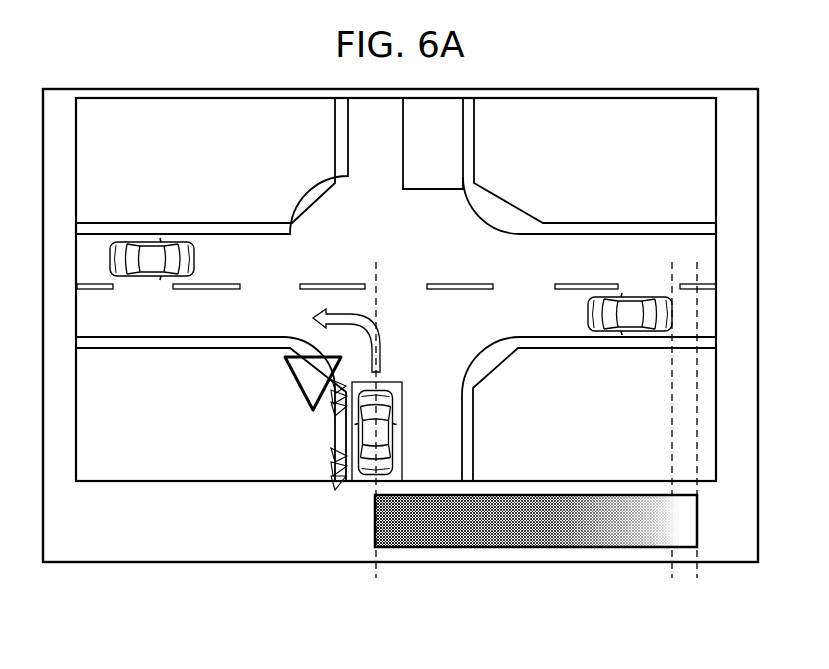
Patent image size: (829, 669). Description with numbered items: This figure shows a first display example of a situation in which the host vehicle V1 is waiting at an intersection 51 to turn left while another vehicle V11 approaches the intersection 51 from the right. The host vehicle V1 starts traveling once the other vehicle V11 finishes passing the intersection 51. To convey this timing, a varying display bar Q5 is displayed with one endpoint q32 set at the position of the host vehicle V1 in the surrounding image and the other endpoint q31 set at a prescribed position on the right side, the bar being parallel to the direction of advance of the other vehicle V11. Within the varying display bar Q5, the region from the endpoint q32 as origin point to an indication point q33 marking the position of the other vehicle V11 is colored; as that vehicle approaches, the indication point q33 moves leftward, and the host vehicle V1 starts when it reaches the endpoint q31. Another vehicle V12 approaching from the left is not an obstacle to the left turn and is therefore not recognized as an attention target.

The intersection 51 is at (454, 264).
The host vehicle V1 is at (372, 451).
The other vehicle V12 is at (144, 253).
The other vehicle V11 is at (645, 308).
The endpoint q32 is at (373, 435).
The indication point q33 is at (653, 435).
The endpoint q31 is at (714, 435).
The varying display bar Q5 is at (537, 548).